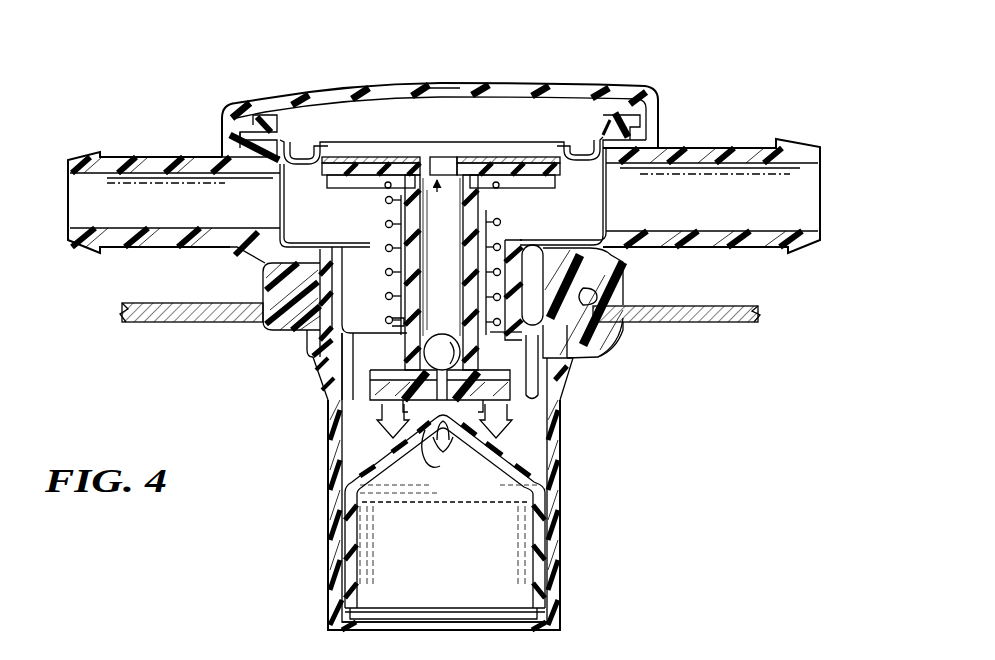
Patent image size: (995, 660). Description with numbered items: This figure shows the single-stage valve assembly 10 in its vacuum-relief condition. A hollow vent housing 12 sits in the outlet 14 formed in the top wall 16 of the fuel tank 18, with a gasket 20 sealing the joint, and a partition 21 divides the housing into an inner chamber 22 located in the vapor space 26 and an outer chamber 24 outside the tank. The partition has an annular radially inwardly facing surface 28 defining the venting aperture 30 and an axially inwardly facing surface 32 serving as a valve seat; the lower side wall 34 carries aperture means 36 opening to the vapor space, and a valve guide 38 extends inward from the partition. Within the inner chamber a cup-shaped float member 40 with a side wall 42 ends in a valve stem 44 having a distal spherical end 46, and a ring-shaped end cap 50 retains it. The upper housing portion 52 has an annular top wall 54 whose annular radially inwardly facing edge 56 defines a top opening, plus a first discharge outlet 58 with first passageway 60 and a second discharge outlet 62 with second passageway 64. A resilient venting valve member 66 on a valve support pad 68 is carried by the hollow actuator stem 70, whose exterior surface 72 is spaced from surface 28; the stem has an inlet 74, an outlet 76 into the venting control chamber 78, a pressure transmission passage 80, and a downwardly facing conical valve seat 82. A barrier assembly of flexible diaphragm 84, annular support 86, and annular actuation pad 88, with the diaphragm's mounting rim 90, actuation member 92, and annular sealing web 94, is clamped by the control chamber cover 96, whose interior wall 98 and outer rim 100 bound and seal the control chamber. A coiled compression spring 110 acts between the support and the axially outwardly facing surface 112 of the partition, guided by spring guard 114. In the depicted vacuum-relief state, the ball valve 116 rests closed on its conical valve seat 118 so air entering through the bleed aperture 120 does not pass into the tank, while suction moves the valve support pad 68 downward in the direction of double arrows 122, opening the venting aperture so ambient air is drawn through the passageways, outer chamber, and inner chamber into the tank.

The valve assembly 10 is at (706, 118).
The vent housing 12 is at (324, 454).
The outlet 14 is at (620, 283).
The top wall 16 is at (702, 306).
The fuel tank 18 is at (750, 306).
The gasket 20 is at (600, 332).
The partition 21 is at (345, 332).
The inner chamber 22 is at (536, 462).
The outer chamber 24 is at (582, 204).
The vapor space 26 is at (692, 411).
The annular radially inwardly facing surface 28 is at (470, 346).
The venting aperture 30 is at (398, 276).
The axially inwardly facing surface 32 is at (336, 400).
The lower side wall 34 is at (556, 513).
The aperture means 36 is at (330, 374).
The valve guide 38 is at (553, 392).
The float member 40 is at (546, 484).
The side wall 42 is at (543, 566).
The valve stem 44 is at (458, 436).
The distal spherical end 46 is at (446, 448).
The end cap 50 is at (560, 626).
The upper housing portion 52 is at (262, 272).
The annular top wall 54 is at (650, 122).
The annular radially inwardly facing edge 56 is at (288, 170).
The first discharge outlet 58 is at (88, 154).
The first passageway 60 is at (148, 180).
The second discharge outlet 62 is at (806, 146).
The second passageway 64 is at (740, 176).
The venting valve member 66 is at (390, 374).
The valve support pad 68 is at (376, 396).
The actuator stem 70 is at (390, 226).
The exterior surface 72 is at (568, 362).
The inlet 74 is at (420, 440).
The outlet 76 is at (446, 157).
The venting control chamber 78 is at (545, 100).
The pressure transmission passage 80 is at (420, 292).
The conical valve seat 82 is at (450, 394).
The flexible diaphragm 84 is at (585, 132).
The annular support 86 is at (556, 172).
The annular actuation pad 88 is at (381, 157).
The mounting rim 90 is at (224, 118).
The actuation member 92 is at (338, 166).
The annular sealing web 94 is at (306, 150).
The control chamber cover 96 is at (657, 88).
The interior wall 98 is at (450, 90).
The outer rim 100 is at (247, 103).
The coiled compression spring 110 is at (496, 248).
The axially outwardly facing surface 112 is at (390, 318).
The spring guard 114 is at (522, 205).
The ball valve 116 is at (443, 346).
The conical valve seat 118 is at (438, 394).
The bleed aperture 120 is at (412, 240).
The double arrows 122 is at (556, 430).